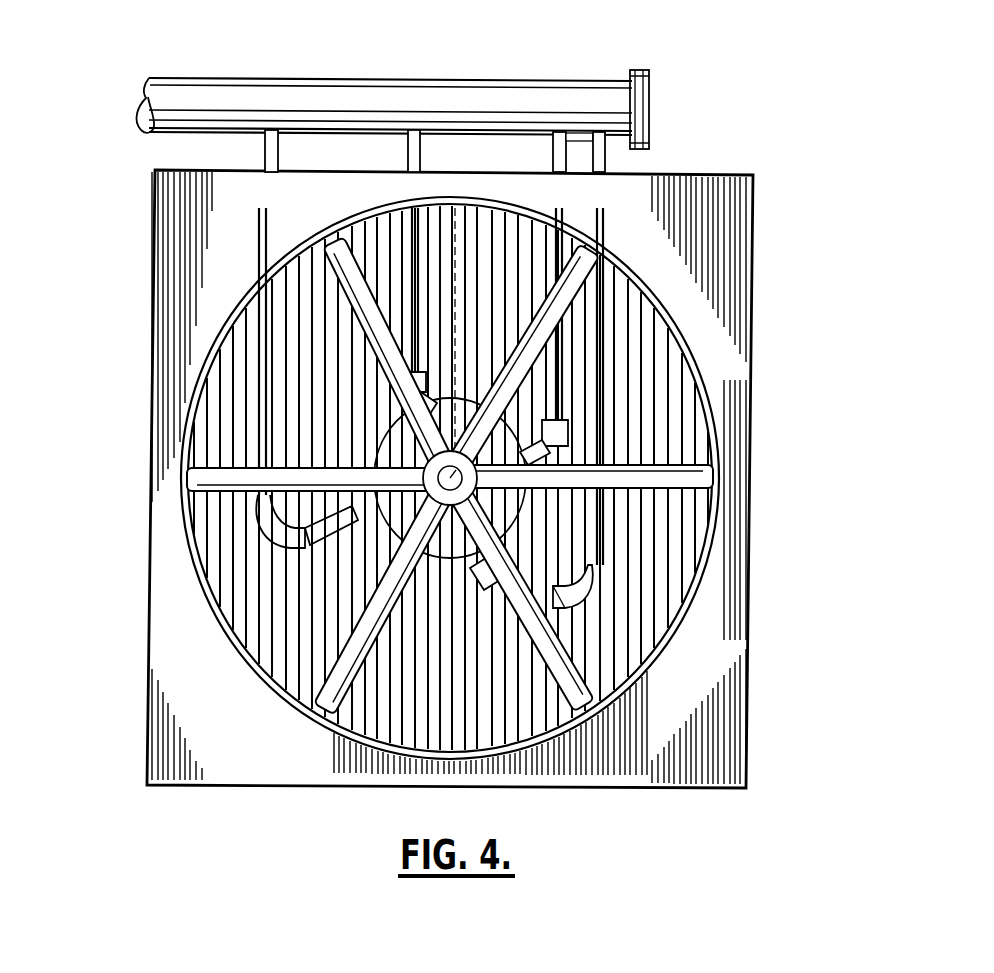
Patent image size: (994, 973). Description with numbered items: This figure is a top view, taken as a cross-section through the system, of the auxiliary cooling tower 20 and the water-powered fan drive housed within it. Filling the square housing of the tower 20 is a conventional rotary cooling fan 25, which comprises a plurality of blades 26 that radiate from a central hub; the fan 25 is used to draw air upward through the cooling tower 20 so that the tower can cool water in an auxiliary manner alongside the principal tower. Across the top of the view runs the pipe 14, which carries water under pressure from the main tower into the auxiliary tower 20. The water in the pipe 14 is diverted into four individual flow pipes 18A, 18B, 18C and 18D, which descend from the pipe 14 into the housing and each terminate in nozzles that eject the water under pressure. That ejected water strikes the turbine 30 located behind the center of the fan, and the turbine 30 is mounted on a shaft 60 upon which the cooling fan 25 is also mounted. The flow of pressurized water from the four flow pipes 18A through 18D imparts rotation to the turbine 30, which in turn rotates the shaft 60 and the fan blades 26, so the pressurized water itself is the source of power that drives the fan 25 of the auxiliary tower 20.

The pipe 14 is at (355, 105).
The flow pipe 18A is at (603, 162).
The flow pipe 18B is at (553, 150).
The flow pipe 18C is at (408, 150).
The flow pipe 18D is at (265, 150).
The auxiliary cooling tower 20 is at (769, 261).
The rotary cooling fan 25 is at (419, 475).
The blades 26 is at (367, 620).
The turbine 30 is at (520, 507).
The shaft 60 is at (522, 450).